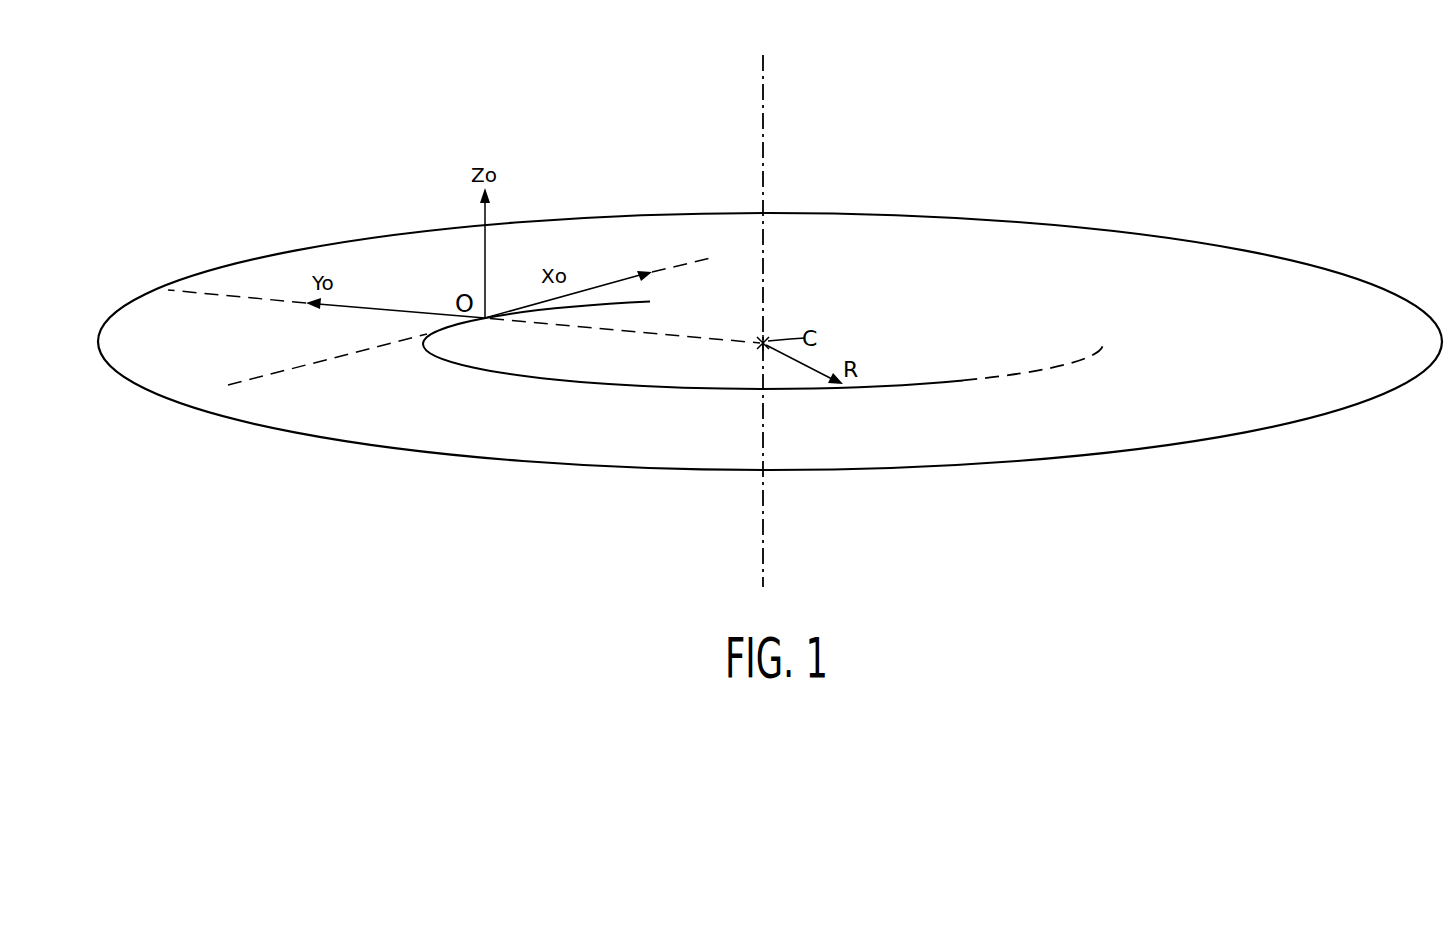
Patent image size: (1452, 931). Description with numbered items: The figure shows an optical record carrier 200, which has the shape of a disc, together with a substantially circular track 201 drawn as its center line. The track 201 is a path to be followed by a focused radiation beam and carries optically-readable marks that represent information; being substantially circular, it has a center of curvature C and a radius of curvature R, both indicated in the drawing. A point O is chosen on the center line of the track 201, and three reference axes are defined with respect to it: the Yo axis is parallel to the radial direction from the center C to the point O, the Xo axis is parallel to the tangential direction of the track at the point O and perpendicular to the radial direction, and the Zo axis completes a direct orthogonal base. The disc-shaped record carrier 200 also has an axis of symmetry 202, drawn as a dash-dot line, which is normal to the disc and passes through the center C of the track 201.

The optical record carrier 200 is at (1052, 460).
The track 201 is at (642, 387).
The axis of symmetry 202 is at (765, 92).